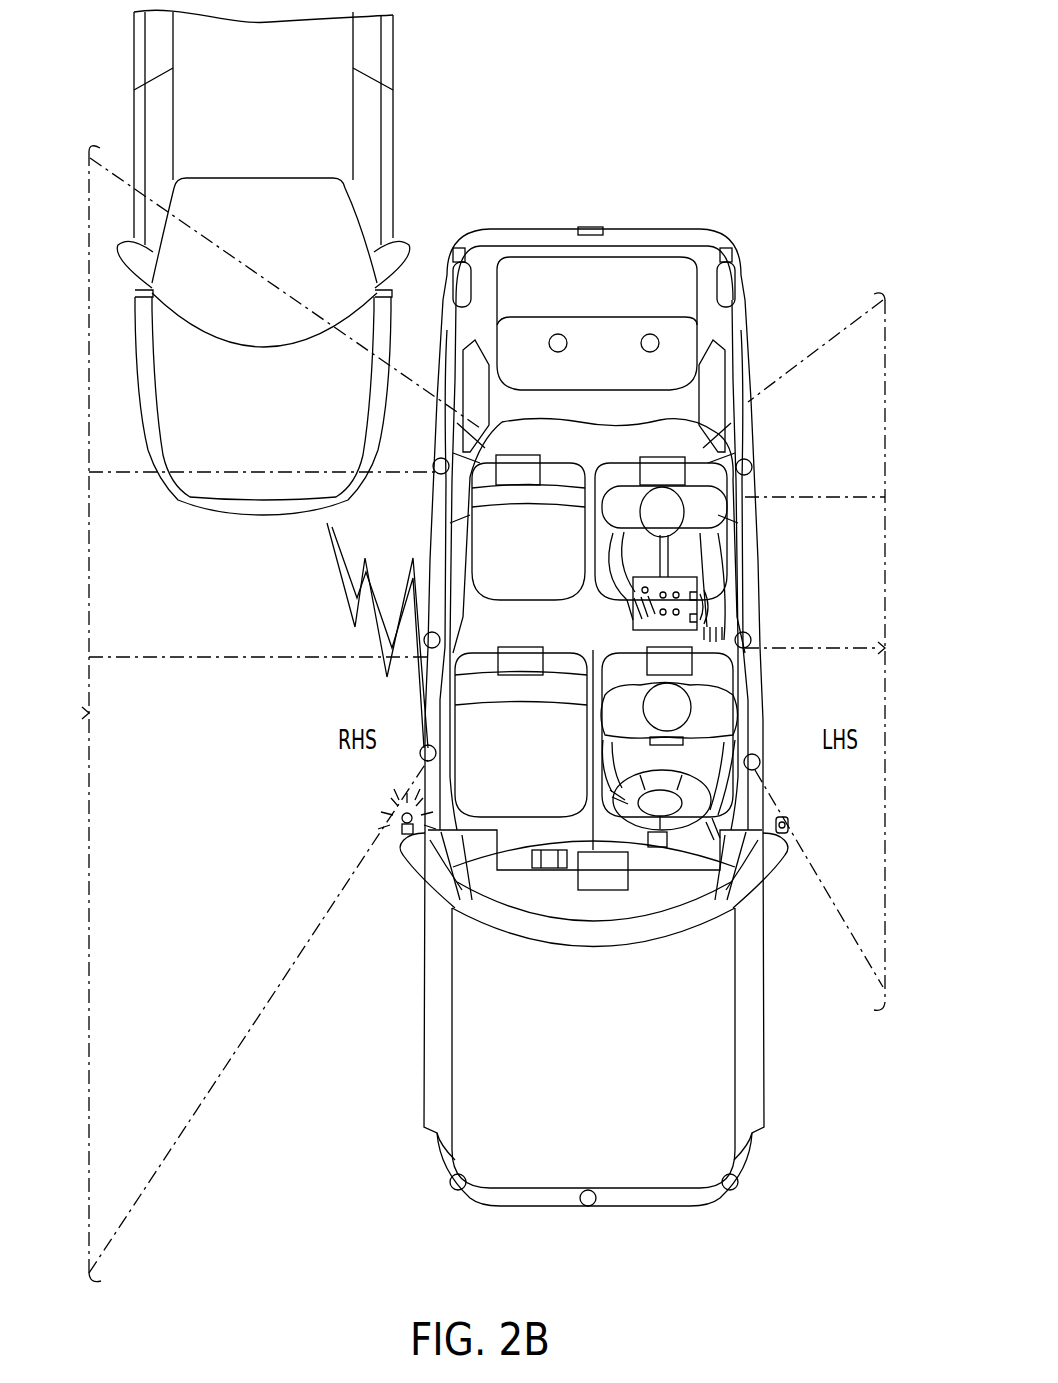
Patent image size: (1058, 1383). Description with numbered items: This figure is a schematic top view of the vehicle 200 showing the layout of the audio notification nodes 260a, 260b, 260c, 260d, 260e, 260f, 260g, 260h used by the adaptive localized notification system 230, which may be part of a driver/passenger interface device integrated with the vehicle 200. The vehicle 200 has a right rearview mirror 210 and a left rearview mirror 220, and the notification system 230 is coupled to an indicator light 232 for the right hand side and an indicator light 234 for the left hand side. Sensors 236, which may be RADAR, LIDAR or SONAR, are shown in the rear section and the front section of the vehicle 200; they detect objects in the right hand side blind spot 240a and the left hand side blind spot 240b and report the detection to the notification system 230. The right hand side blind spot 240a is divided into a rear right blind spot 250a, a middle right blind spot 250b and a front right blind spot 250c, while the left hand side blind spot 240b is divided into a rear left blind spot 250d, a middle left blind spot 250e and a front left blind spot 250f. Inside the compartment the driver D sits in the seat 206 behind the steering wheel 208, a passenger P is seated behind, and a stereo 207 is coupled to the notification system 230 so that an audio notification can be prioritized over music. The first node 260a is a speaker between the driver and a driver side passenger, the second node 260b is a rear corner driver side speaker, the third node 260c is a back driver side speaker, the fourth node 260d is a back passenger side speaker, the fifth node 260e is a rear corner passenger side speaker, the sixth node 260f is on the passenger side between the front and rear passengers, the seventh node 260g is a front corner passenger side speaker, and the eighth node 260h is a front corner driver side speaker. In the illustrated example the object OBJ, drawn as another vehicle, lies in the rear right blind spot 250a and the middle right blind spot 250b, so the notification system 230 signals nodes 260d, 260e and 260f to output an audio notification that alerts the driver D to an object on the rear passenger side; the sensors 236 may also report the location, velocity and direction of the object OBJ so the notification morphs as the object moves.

The vehicle 200 is at (571, 713).
The seat 206 is at (667, 663).
The stereo 207 is at (548, 870).
The steering wheel 208 is at (620, 792).
The right rearview mirror 210 is at (437, 878).
The left rearview mirror 220 is at (773, 875).
The adaptive localized notification system 230 is at (604, 900).
The indicator light 232 is at (400, 824).
The indicator light 234 is at (790, 826).
The sensors 236 is at (460, 243).
The right hand side blind spot 240a is at (256, 714).
The left hand side blind spot 240b is at (847, 651).
The rear right blind spot 250a is at (136, 403).
The middle right blind spot 250b is at (136, 586).
The front right blind spot 250c is at (139, 955).
The rear left blind spot 250d is at (869, 471).
The middle left blind spot 250e is at (869, 576).
The front left blind spot 250f is at (879, 892).
The first audio notification node 260a is at (750, 636).
The second audio notification node 260b is at (749, 460).
The third audio notification node 260c is at (652, 334).
The fourth audio notification node 260d is at (561, 334).
The fifth audio notification node 260e is at (441, 476).
The sixth audio notification node 260f is at (426, 636).
The seventh audio notification node 260g is at (424, 748).
The eighth audio notification node 260h is at (758, 770).
The object OBJ is at (168, 525).
The passenger P is at (715, 492).
The driver D is at (722, 718).